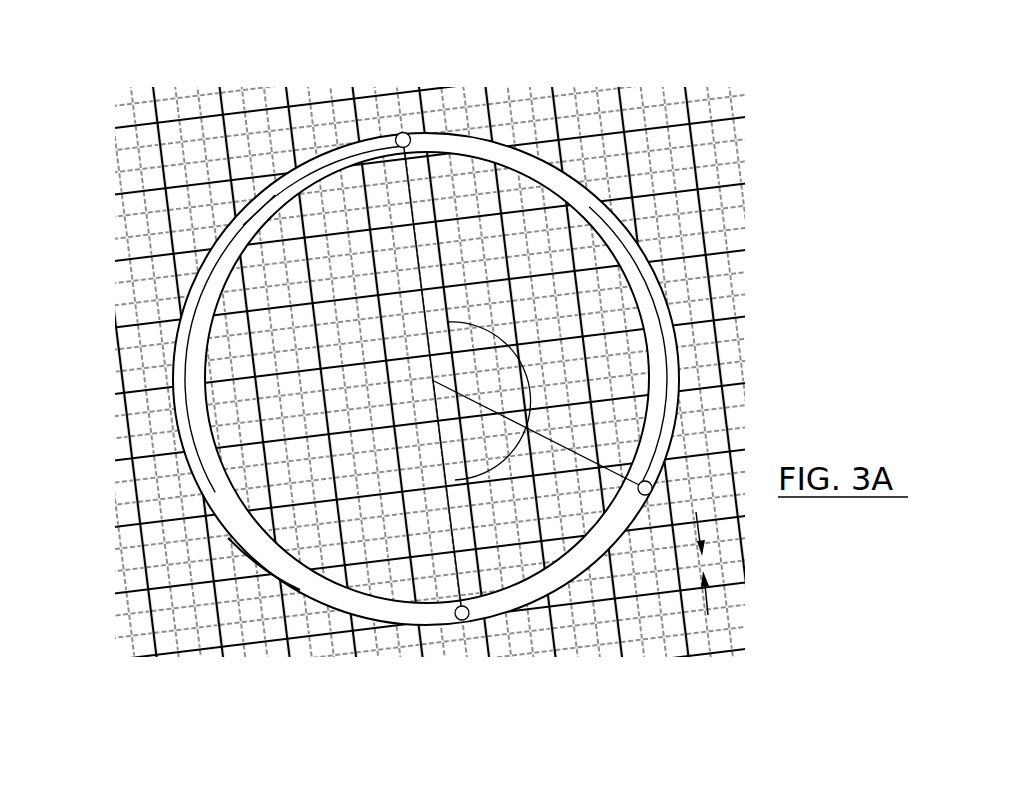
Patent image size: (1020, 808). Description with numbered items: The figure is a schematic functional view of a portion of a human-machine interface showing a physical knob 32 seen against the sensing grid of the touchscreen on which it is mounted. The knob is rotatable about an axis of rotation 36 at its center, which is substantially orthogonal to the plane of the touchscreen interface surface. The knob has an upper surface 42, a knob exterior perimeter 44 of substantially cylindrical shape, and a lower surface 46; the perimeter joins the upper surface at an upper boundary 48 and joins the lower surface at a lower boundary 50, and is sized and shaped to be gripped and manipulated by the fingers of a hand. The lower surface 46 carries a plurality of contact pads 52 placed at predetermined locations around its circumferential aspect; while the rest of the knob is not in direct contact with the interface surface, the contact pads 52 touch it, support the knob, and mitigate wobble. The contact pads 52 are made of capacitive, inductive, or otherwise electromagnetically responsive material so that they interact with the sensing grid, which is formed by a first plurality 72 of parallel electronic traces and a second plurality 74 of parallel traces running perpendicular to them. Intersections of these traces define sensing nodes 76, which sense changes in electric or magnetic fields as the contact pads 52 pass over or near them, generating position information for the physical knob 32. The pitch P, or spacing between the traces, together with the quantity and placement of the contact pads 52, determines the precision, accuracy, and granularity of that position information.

The physical knob 32 is at (213, 493).
The axis of rotation 36 is at (432, 380).
The upper surface 42 is at (345, 379).
The knob exterior perimeter 44 is at (180, 380).
The lower surface 46 is at (177, 328).
The upper boundary 48 is at (243, 225).
The lower boundary 50 is at (228, 538).
The contact pads 52 is at (403, 132).
The first plurality of electronic traces 72 is at (646, 125).
The second plurality of electronic traces 74 is at (700, 152).
The sensing nodes 76 is at (715, 330).
The pitch P is at (707, 597).